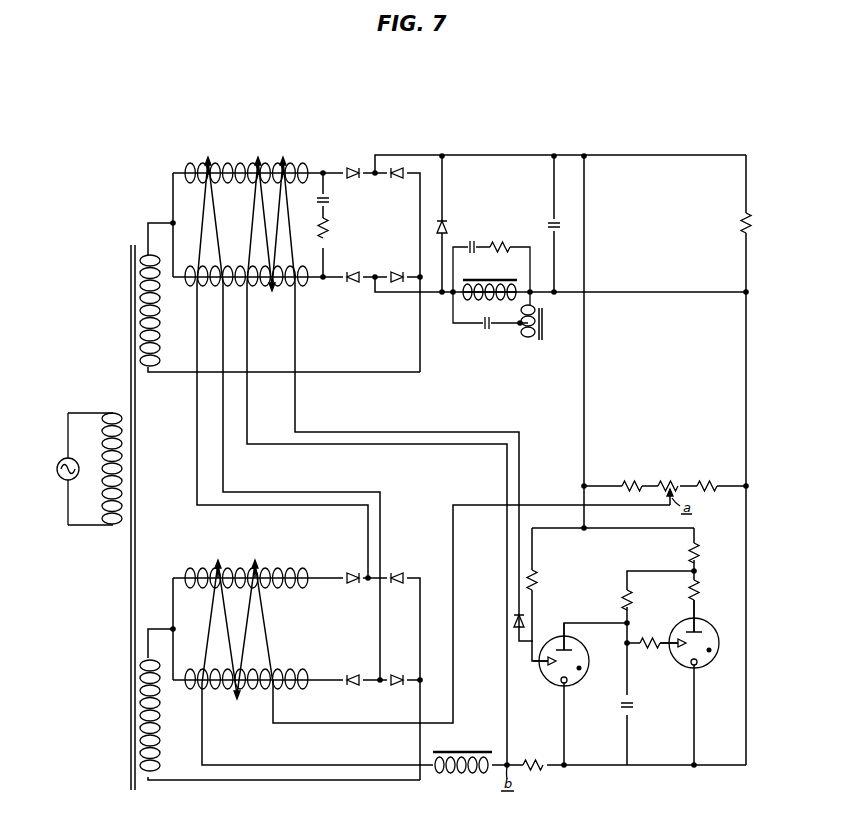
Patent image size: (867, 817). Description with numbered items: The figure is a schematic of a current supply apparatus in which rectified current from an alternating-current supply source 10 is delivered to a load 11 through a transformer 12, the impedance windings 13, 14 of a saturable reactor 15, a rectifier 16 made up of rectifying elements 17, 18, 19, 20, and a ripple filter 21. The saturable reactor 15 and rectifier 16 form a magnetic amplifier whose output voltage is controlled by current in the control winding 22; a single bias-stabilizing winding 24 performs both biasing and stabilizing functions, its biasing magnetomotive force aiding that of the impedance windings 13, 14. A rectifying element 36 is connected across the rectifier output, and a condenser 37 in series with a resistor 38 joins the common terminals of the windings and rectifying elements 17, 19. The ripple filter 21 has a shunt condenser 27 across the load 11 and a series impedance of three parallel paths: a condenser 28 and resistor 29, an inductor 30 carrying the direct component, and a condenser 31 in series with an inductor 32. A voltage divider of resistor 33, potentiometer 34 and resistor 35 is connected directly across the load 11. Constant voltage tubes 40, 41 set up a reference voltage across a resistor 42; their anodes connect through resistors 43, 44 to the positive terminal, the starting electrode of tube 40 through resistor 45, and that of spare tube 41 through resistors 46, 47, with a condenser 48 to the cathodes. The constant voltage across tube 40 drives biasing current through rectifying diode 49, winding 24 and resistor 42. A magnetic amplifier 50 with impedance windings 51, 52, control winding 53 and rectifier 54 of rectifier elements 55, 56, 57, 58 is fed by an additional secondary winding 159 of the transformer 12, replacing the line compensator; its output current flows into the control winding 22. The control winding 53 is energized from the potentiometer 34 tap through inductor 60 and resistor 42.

The alternating-current supply source 10 is at (57, 469).
The load 11 is at (742, 228).
The transformer 12 is at (271, 505).
The impedance winding 13 is at (250, 187).
The impedance winding 14 is at (227, 270).
The saturable reactor 15 is at (248, 217).
The rectifier 16 is at (531, 253).
The rectifying element 17 is at (351, 182).
The rectifying element 18 is at (394, 182).
The rectifying element 19 is at (354, 258).
The rectifying element 20 is at (398, 258).
The ripple filter 21 is at (512, 332).
The control winding 22 is at (215, 222).
The bias-stabilizing winding 24 is at (289, 222).
The shunt condenser 27 is at (550, 227).
The condenser 28 is at (472, 253).
The resistor 29 is at (500, 237).
The inductor 30 is at (519, 289).
The condenser 31 is at (489, 329).
The inductor 32 is at (523, 337).
The resistor 33 is at (641, 481).
The potentiometer 34 is at (685, 481).
The resistor 35 is at (723, 481).
The rectifying element 36 is at (450, 226).
The condenser 37 is at (329, 204).
The resistor 38 is at (329, 238).
The constant voltage tube 40 is at (586, 668).
The constant voltage tube 41 is at (710, 663).
The resistor 42 is at (535, 775).
The resistor 43 is at (700, 594).
The resistor 44 is at (691, 551).
The resistor 45 is at (537, 580).
The resistor 46 is at (646, 648).
The resistor 47 is at (632, 600).
The condenser 48 is at (634, 706).
The rectifier element 49 is at (512, 623).
The magnetic amplifier 50 is at (258, 626).
The impedance winding 51 is at (291, 588).
The impedance winding 52 is at (301, 674).
The control winding 53 is at (266, 629).
The rectifier 54 is at (380, 668).
The rectifier element 55 is at (354, 562).
The rectifier element 56 is at (396, 562).
The rectifier element 57 is at (354, 664).
The rectifier element 58 is at (397, 664).
The inductor 60 is at (452, 775).
The secondary winding 159 is at (160, 716).